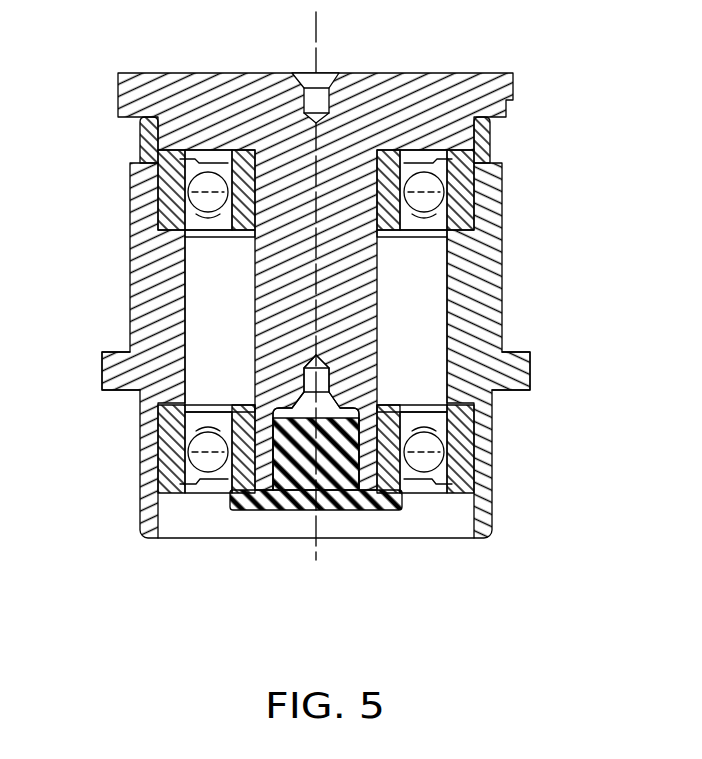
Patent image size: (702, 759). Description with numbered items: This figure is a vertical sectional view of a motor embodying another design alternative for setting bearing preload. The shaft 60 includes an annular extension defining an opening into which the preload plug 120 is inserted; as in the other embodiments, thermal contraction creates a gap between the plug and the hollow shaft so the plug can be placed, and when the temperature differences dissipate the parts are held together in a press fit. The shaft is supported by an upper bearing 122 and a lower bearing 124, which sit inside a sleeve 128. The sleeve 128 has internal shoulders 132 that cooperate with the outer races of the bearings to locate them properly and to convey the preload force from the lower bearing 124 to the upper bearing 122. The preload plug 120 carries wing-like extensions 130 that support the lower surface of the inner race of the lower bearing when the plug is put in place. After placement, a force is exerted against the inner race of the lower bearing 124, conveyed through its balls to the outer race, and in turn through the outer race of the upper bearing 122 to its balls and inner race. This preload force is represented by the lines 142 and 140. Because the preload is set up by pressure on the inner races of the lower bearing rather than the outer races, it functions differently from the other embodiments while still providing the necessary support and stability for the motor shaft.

The shaft 60 is at (237, 84).
The preload plug 120 is at (340, 511).
The upper bearing 122 is at (209, 188).
The lower bearing 124 is at (208, 454).
The sleeve 128 is at (102, 378).
The wing-like extensions 130 is at (186, 252).
The internal shoulders 132 is at (187, 383).
The preload force line 140 is at (467, 493).
The preload force line 142 is at (422, 190).